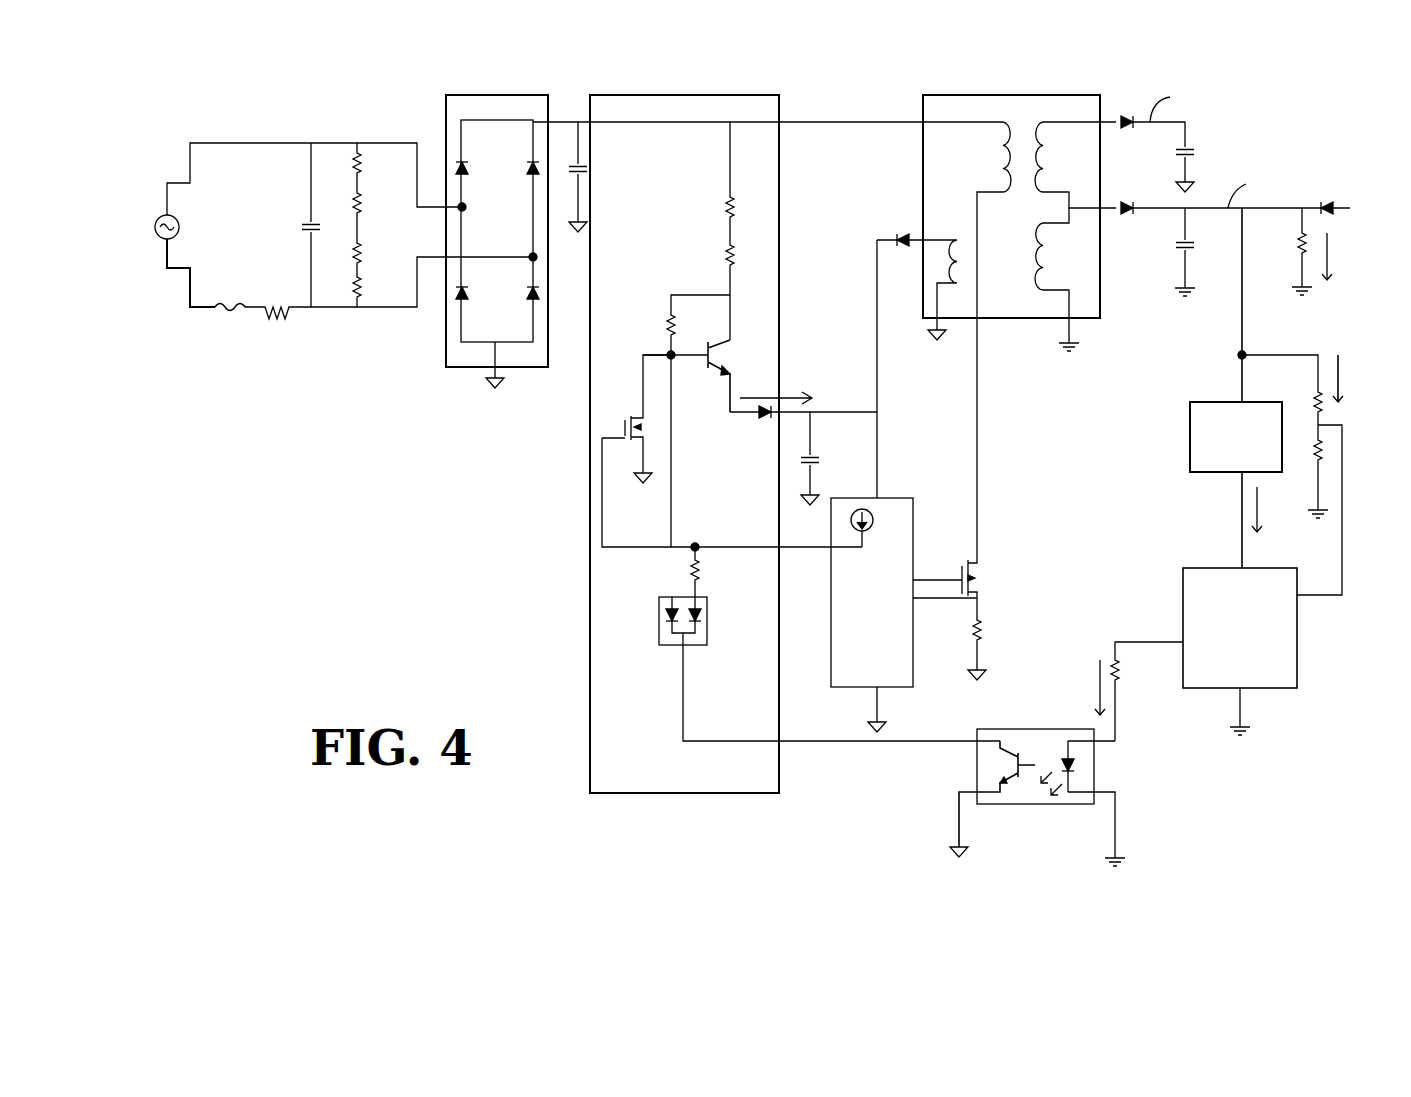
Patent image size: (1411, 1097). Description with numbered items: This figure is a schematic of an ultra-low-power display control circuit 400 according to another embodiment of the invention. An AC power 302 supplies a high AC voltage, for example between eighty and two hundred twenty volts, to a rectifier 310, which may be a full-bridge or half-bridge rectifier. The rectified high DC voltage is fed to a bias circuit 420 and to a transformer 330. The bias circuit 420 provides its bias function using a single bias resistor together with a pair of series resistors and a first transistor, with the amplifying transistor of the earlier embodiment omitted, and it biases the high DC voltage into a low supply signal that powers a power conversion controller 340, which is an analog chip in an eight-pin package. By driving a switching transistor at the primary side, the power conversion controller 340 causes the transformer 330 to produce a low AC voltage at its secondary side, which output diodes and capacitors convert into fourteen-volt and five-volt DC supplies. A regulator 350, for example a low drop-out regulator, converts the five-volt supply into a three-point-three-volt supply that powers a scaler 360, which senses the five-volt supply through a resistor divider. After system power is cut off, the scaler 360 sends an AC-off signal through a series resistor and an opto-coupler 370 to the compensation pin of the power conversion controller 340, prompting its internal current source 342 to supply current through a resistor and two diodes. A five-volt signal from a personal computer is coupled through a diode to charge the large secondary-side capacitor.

The ultra-low-power display control circuit 400 is at (1353, 102).
The AC power 302 is at (176, 218).
The rectifier 310 is at (446, 130).
The bias circuit 420 is at (779, 182).
The transformer 330 is at (923, 205).
The power conversion controller 340 is at (921, 604).
The current source 342 is at (871, 517).
The regulator 350 is at (1190, 432).
The scaler 360 is at (1183, 607).
The opto-coupler 370 is at (1007, 729).